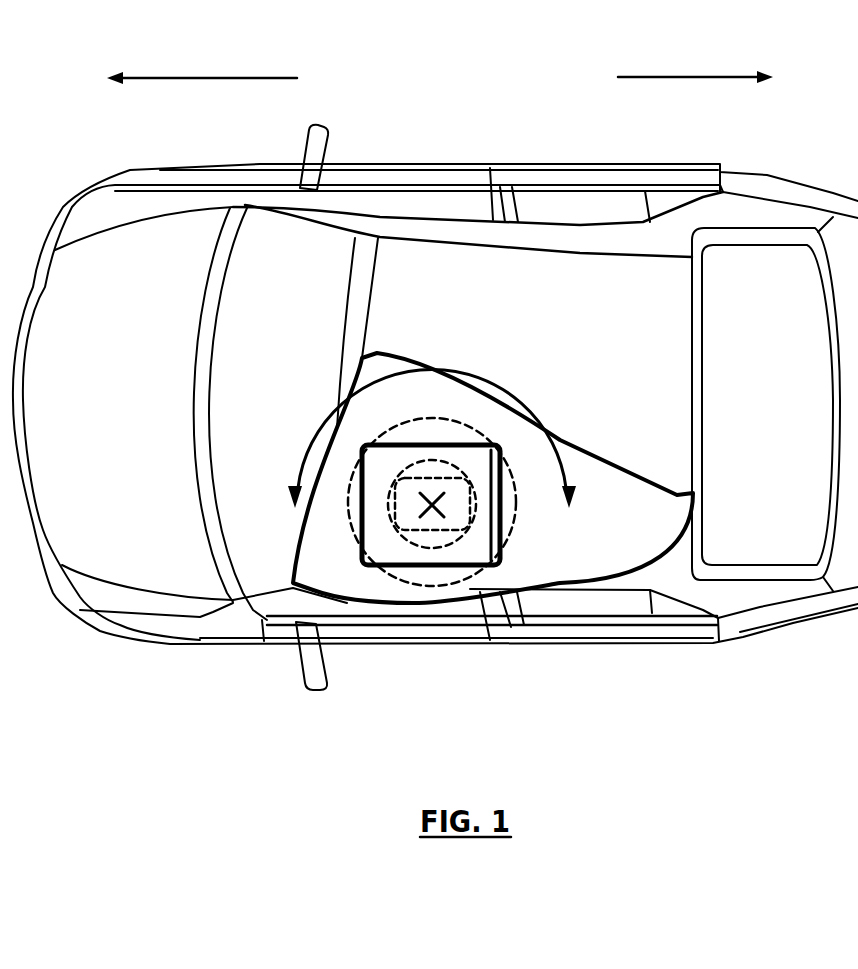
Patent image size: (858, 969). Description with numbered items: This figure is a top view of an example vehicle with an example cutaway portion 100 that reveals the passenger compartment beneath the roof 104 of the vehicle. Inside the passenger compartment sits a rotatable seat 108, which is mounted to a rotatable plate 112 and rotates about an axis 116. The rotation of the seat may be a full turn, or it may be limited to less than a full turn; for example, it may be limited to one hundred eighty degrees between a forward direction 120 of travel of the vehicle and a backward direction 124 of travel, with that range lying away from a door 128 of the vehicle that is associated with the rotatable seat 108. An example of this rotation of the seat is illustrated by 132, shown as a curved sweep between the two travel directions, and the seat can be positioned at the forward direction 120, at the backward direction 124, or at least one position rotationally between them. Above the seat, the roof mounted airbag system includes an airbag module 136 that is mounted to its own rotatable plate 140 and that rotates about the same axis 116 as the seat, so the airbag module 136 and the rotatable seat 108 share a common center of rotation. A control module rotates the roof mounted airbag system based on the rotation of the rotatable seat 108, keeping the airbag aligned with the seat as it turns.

The cutaway portion 100 is at (570, 440).
The roof 104 is at (543, 347).
The rotatable seat 108 is at (433, 566).
The rotatable plate 112 is at (413, 584).
The axis 116 is at (435, 508).
The forward direction 120 is at (210, 75).
The backward direction 124 is at (688, 75).
The door 128 is at (415, 645).
The rotation of the rotatable seat 132 is at (437, 368).
The airbag module 136 is at (390, 507).
The rotatable plate 140 is at (393, 498).